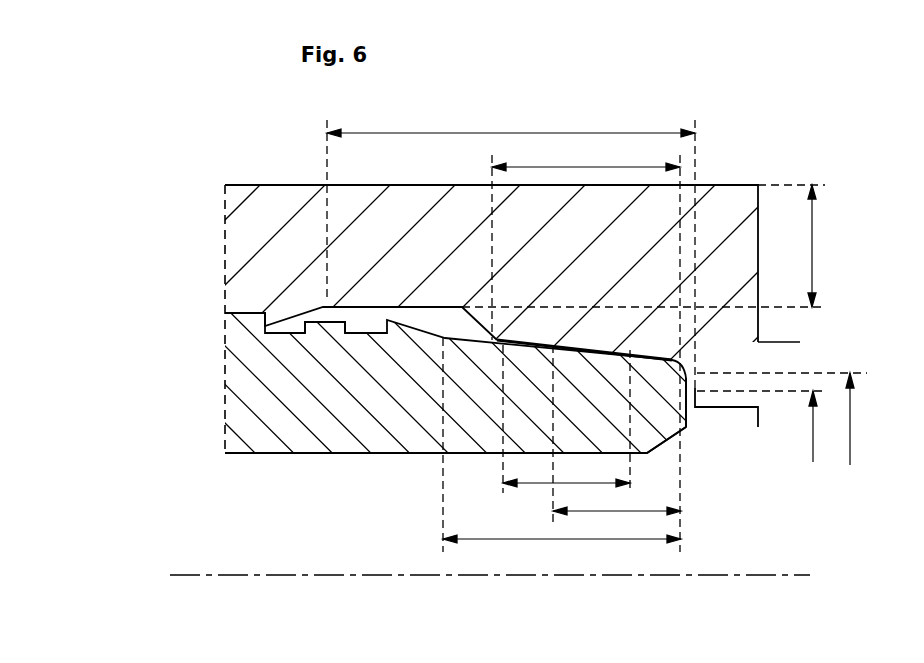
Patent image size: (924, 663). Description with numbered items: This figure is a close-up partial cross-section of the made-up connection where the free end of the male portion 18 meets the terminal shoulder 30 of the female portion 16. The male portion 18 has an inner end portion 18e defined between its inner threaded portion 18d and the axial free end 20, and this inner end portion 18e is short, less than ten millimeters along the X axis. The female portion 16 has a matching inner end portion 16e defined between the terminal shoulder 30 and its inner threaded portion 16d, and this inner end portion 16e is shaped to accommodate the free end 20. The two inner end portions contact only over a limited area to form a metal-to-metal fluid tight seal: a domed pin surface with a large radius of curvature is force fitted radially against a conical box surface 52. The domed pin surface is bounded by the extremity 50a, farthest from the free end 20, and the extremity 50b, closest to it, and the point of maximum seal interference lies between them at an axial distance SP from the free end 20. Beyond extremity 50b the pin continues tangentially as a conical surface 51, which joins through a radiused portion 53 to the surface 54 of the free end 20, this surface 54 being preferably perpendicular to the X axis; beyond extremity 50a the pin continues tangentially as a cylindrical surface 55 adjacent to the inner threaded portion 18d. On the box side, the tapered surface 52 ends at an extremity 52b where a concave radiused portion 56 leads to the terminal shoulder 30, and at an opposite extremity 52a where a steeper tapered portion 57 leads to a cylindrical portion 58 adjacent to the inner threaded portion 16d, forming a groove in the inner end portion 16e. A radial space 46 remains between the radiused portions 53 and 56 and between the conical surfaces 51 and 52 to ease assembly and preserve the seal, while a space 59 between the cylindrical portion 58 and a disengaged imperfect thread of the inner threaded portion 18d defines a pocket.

The female portion 16 is at (307, 185).
The male portion 18 is at (397, 453).
The inner threaded portion 16d is at (292, 330).
The inner threaded portion 18d is at (330, 327).
The inner end portion 16e is at (630, 178).
The inner end portion 18e is at (630, 463).
The free end 20 is at (688, 414).
The terminal shoulder 30 is at (690, 415).
The radial space 46 is at (697, 372).
The extremity 50a is at (500, 342).
The extremity 50b is at (663, 303).
The conical surface 51 is at (680, 315).
The box surface 52 is at (600, 342).
The extremity 52a is at (521, 338).
The extremity 52b is at (693, 343).
The radiused portion 53 is at (695, 392).
The surface 54 is at (633, 442).
The cylindrical surface 55 is at (490, 353).
The concave radiused portion 56 is at (692, 352).
The steeper tapered portion 57 is at (485, 325).
The cylindrical portion 58 is at (420, 307).
The space 59 is at (366, 322).
The axial distance SP is at (622, 511).
The axis X is at (790, 575).